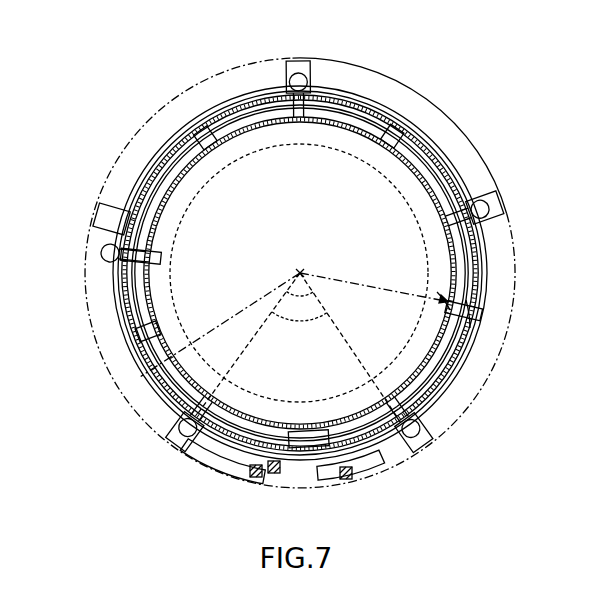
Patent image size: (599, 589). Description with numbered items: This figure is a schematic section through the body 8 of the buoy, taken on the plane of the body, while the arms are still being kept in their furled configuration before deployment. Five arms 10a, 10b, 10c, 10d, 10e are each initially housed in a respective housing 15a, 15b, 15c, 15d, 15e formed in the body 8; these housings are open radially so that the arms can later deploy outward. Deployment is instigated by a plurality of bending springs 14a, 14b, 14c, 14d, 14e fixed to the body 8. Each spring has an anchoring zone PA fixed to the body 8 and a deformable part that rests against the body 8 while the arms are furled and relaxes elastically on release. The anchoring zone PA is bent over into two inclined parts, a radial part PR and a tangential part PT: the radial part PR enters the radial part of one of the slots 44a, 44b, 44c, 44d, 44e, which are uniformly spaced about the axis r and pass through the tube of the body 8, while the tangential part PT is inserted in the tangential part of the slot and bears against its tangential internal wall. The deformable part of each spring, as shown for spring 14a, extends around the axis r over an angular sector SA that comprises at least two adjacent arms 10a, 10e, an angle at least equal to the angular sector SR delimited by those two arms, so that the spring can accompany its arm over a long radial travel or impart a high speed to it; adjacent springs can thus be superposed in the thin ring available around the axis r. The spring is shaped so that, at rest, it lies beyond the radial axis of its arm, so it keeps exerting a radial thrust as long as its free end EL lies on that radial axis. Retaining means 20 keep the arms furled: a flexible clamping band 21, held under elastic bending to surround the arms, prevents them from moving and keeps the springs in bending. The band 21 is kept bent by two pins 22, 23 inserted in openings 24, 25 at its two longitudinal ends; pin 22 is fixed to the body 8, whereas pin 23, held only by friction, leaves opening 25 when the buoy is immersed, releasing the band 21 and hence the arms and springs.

The body 8 is at (150, 120).
The retaining means 20 is at (245, 98).
The bending spring 14a is at (150, 400).
The bending spring 14b is at (145, 175).
The bending spring 14c is at (350, 100).
The bending spring 14d is at (485, 262).
The bending spring 14e is at (385, 462).
The arm 10a is at (175, 418).
The arm 10b is at (122, 205).
The arm 10c is at (294, 60).
The arm 10d is at (487, 236).
The arm 10e is at (400, 442).
The housing 15a is at (170, 455).
The housing 15b is at (95, 205).
The housing 15c is at (302, 58).
The housing 15d is at (500, 206).
The housing 15e is at (425, 450).
The slot 44a is at (488, 336).
The slot 44b is at (303, 436).
The slot 44c is at (180, 305).
The slot 44d is at (210, 152).
The slot 44e is at (372, 138).
The flexible clamping band 21 is at (210, 462).
The pin 22 is at (320, 481).
The pin 23 is at (272, 474).
The opening 24 is at (346, 480).
The opening 25 is at (254, 478).
The angular sector SA is at (298, 346).
The angular sector SR is at (299, 331).
The anchoring zone PA is at (432, 292).
The tangential part PT is at (437, 292).
The radial part PR is at (470, 320).
The free end EL is at (150, 383).
The axis r is at (300, 261).